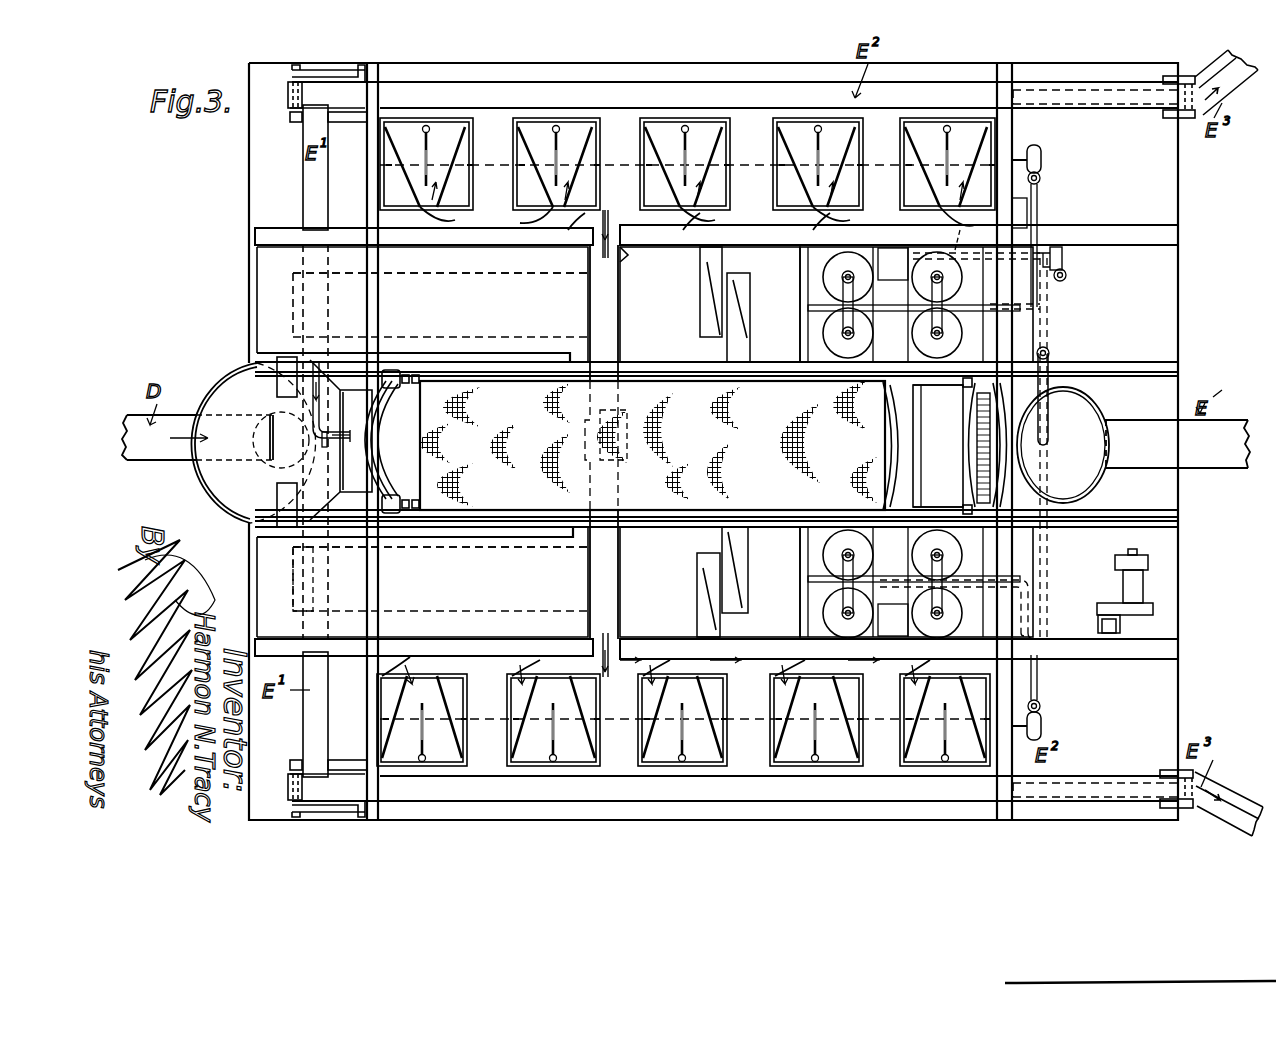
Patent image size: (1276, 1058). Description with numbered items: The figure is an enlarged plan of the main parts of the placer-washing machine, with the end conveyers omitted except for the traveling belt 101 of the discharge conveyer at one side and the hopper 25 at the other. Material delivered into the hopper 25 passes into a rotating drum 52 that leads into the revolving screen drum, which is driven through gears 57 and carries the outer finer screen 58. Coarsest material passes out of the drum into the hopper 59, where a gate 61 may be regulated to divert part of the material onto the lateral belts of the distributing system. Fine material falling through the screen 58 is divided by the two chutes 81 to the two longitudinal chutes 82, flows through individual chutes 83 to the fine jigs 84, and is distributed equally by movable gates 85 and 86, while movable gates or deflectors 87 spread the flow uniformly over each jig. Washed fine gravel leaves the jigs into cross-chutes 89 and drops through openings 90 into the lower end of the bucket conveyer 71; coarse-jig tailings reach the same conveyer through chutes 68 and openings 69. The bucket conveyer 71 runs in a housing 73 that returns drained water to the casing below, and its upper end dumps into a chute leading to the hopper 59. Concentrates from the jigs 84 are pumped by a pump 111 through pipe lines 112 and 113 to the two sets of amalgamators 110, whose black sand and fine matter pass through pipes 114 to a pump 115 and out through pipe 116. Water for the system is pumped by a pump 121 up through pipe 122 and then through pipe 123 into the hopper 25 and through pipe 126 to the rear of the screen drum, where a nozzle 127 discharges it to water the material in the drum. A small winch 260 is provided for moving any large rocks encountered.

The hopper 25 is at (1080, 425).
The rotating drum 52 is at (938, 446).
The gears 57 is at (977, 455).
The outer finer screen 58 is at (652, 445).
The hopper 59 is at (248, 495).
The gate 61 is at (290, 460).
The chutes 68 is at (740, 355).
The openings 69 is at (735, 300).
The bucket conveyer 71 is at (486, 273).
The housing 73 is at (275, 592).
The chutes 81 is at (605, 300).
The longitudinal chutes 82 is at (716, 443).
The individual chutes 83 is at (684, 441).
The fine jigs 84 is at (712, 117).
The movable gate 85 is at (602, 666).
The movable gate 86 is at (812, 668).
The movable gates or deflectors 87 is at (557, 155).
The cross-chutes 89 is at (710, 259).
The openings 90 is at (710, 320).
The traveling belt 101 is at (197, 438).
The amalgamators 110 is at (925, 300).
The pump 111 is at (1040, 160).
The pipe line 112 is at (872, 160).
The pipe line 113 is at (1036, 204).
The pipes 114 is at (1043, 572).
The pump 115 is at (1060, 250).
The pipe 116 is at (1067, 273).
The pump 121 is at (1052, 353).
The pipe 122 is at (1050, 340).
The pipe 123 is at (1058, 403).
The pipe 126 is at (1040, 328).
The nozzle 127 is at (353, 443).
The winch 260 is at (1118, 583).